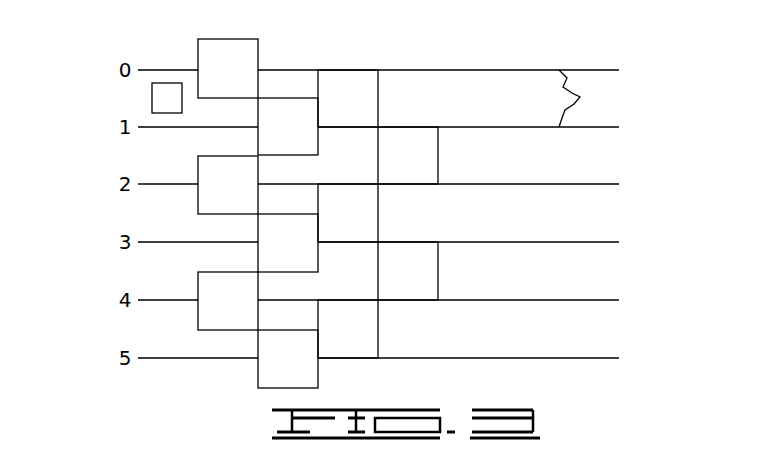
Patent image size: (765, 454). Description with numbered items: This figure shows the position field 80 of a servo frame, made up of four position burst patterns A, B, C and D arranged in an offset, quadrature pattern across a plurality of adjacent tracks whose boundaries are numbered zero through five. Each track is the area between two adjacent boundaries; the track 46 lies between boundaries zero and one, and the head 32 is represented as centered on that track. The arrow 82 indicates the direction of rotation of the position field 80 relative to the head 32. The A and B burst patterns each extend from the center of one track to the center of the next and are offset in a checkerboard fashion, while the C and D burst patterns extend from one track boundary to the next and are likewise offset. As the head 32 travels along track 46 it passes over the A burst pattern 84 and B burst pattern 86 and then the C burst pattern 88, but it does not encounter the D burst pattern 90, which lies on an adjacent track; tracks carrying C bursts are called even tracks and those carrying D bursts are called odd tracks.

The head 32 is at (159, 99).
The track 46 is at (592, 94).
The position field 80 is at (342, 197).
The arrow 82 is at (494, 51).
The A burst pattern 84 is at (223, 48).
The B burst pattern 86 is at (305, 148).
The C burst pattern 88 is at (339, 120).
The D burst pattern 90 is at (422, 185).